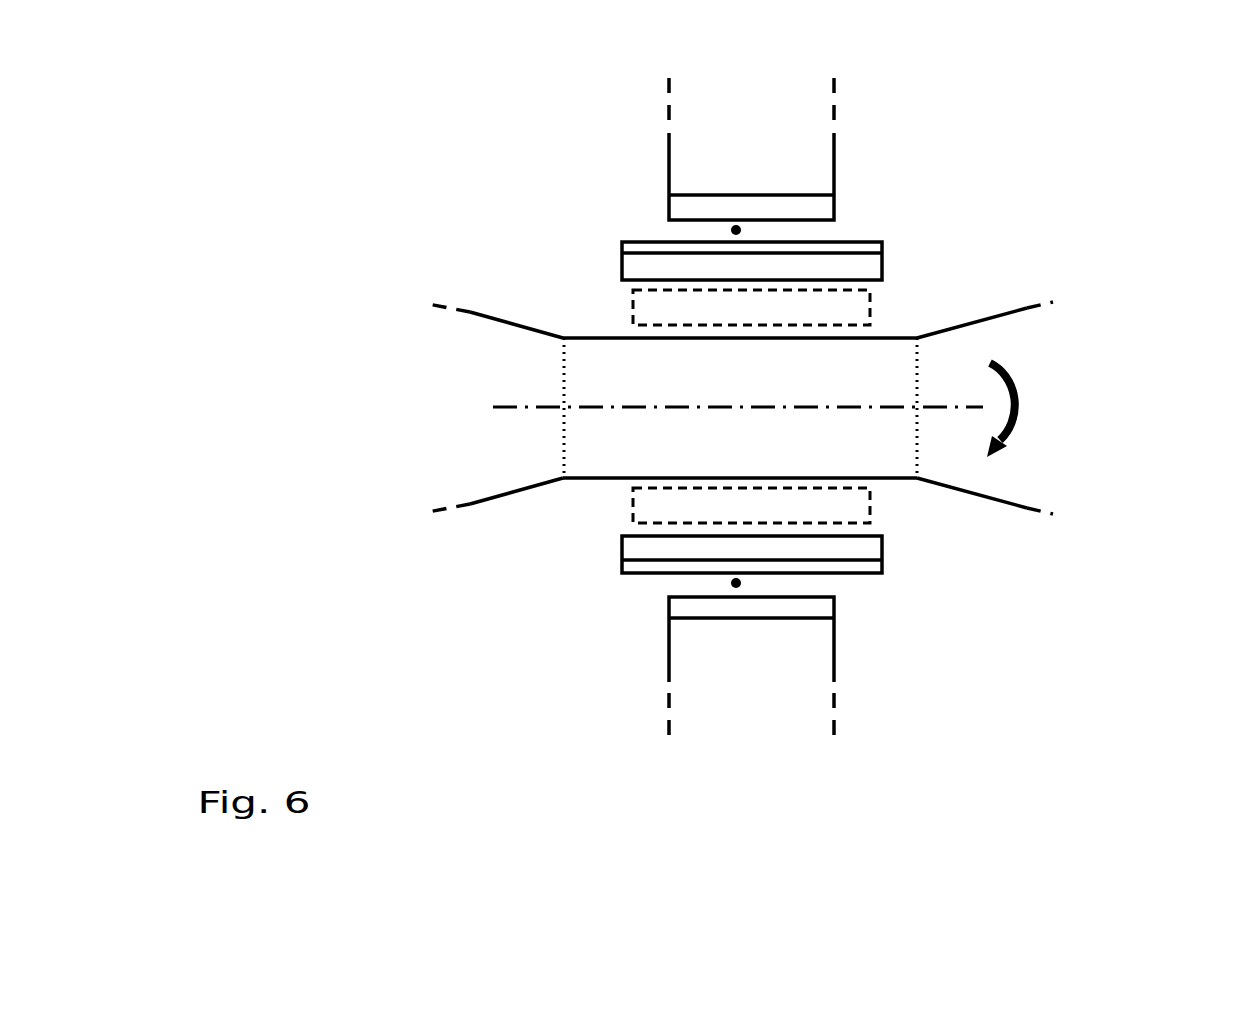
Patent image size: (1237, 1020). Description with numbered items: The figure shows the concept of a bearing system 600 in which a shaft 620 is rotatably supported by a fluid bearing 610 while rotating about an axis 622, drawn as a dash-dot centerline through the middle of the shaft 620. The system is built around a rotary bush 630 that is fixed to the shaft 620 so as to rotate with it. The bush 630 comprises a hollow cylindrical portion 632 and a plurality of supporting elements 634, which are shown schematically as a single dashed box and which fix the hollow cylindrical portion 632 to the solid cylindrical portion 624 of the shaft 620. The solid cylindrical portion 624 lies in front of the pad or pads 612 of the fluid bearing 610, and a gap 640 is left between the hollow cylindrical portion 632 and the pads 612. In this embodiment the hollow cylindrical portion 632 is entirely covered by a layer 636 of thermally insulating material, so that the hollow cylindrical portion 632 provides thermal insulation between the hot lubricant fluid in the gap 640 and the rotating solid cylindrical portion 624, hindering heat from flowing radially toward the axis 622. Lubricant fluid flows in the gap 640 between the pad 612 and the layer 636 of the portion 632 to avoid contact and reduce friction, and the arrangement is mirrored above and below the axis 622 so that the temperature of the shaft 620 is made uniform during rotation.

The bearing system 600 is at (468, 116).
The fluid bearing 610 is at (862, 65).
The pad 612 is at (683, 205).
The gap 640 is at (737, 229).
The rotary bush 630 is at (893, 230).
The hollow cylindrical portion 632 is at (635, 265).
The supporting elements 634 is at (658, 307).
The layer of thermally insulating material 636 is at (635, 248).
The shaft 620 is at (1083, 300).
The axis 622 is at (700, 407).
The solid cylindrical portion 624 is at (583, 437).